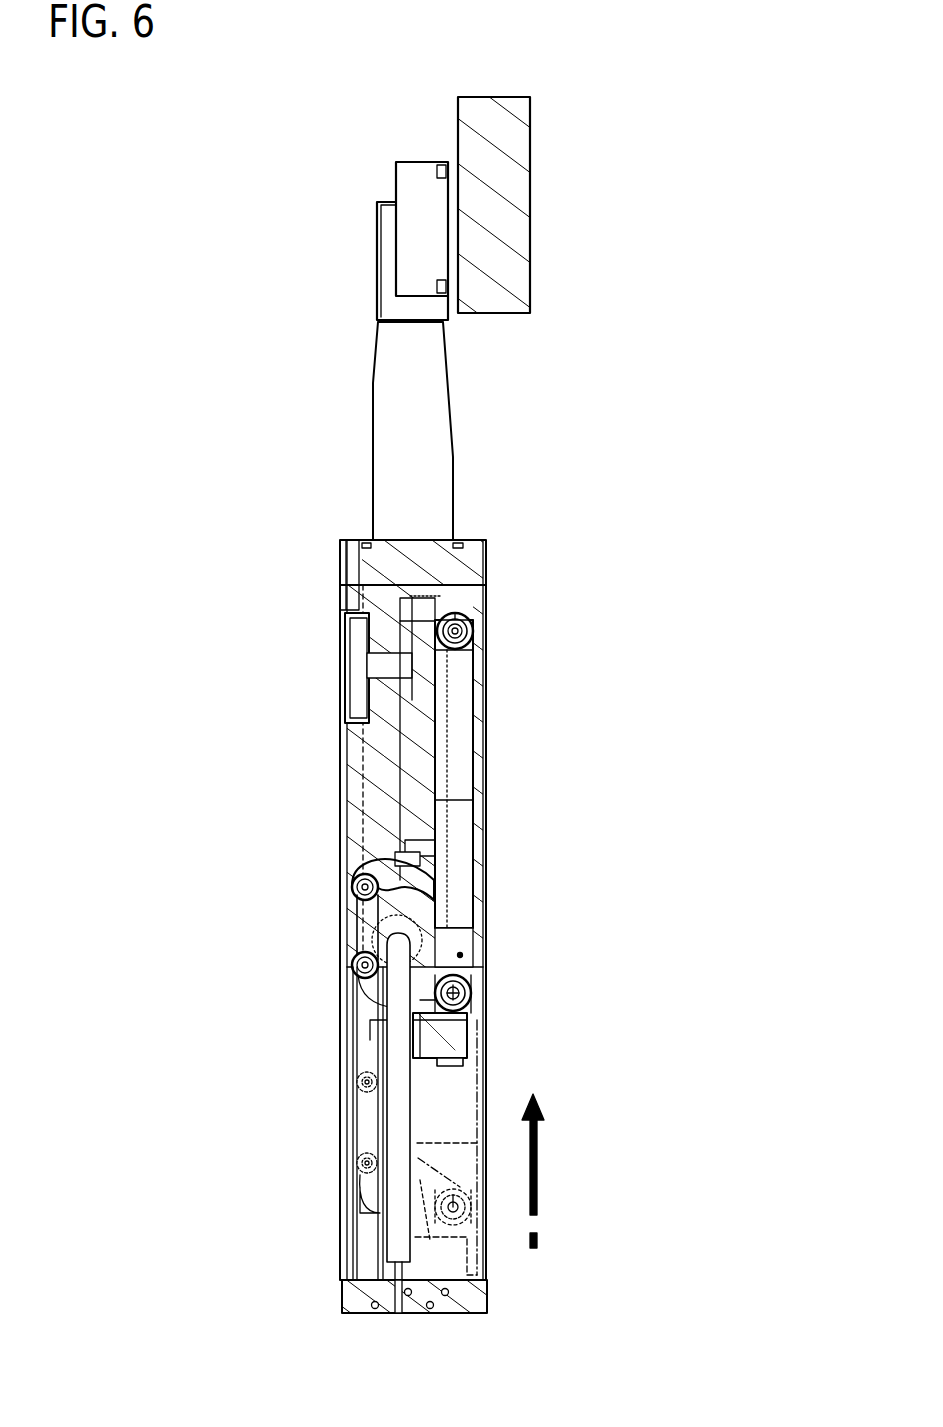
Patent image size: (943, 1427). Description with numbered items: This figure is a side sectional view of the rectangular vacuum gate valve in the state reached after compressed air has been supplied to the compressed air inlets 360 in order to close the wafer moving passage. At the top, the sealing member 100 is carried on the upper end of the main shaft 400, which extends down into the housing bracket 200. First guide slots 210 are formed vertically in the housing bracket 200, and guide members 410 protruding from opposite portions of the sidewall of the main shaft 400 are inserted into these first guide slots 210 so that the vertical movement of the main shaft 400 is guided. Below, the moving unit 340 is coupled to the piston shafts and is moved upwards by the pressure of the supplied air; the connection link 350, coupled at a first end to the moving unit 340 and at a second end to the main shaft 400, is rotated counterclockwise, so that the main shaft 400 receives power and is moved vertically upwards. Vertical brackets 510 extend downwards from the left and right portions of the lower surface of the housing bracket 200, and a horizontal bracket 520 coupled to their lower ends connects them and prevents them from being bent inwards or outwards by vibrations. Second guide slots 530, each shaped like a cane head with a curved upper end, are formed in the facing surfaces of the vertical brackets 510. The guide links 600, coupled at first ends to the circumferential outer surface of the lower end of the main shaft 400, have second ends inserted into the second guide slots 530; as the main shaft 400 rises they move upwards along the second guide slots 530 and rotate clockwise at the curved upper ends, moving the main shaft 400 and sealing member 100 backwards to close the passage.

The sealing member 100 is at (393, 173).
The main shaft 400 is at (456, 434).
The housing bracket 200 is at (488, 557).
The guide members 410 is at (472, 626).
The first guide slots 210 is at (460, 740).
The connection link 350 is at (478, 973).
The moving unit 340 is at (478, 1031).
The compressed air inlets 360 is at (463, 1068).
The guide links 600 is at (353, 972).
The second guide slots 530 is at (364, 1030).
The vertical brackets 510 is at (347, 1187).
The horizontal bracket 520 is at (342, 1308).